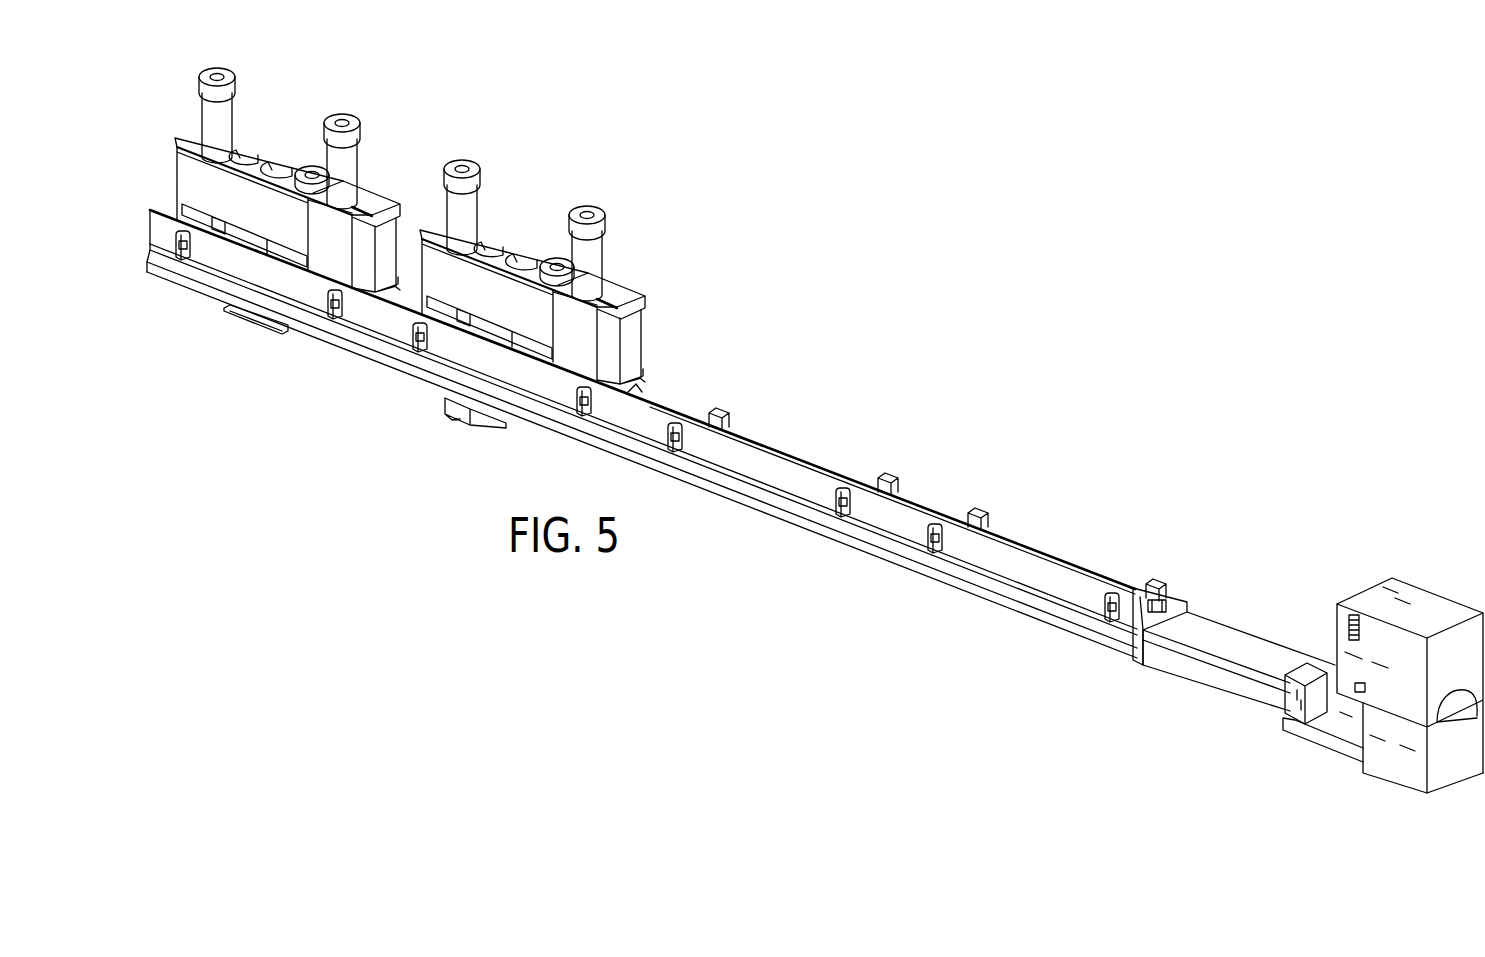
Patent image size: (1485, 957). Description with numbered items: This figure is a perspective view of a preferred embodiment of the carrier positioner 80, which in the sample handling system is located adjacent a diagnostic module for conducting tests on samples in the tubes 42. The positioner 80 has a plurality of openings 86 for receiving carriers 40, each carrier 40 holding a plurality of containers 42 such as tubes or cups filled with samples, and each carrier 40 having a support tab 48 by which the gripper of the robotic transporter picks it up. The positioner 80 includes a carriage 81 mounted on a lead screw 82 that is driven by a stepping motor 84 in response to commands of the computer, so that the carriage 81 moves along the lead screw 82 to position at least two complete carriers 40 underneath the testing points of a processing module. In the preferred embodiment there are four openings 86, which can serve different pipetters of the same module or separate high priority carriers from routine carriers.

The carrier 40 is at (560, 269).
The containers 42 is at (592, 265).
The support tab 48 is at (532, 307).
The carrier positioner 80 is at (961, 358).
The carriage 81 is at (945, 560).
The lead screw 82 is at (1232, 657).
The stepping motor 84 is at (1390, 767).
The openings 86 is at (782, 453).